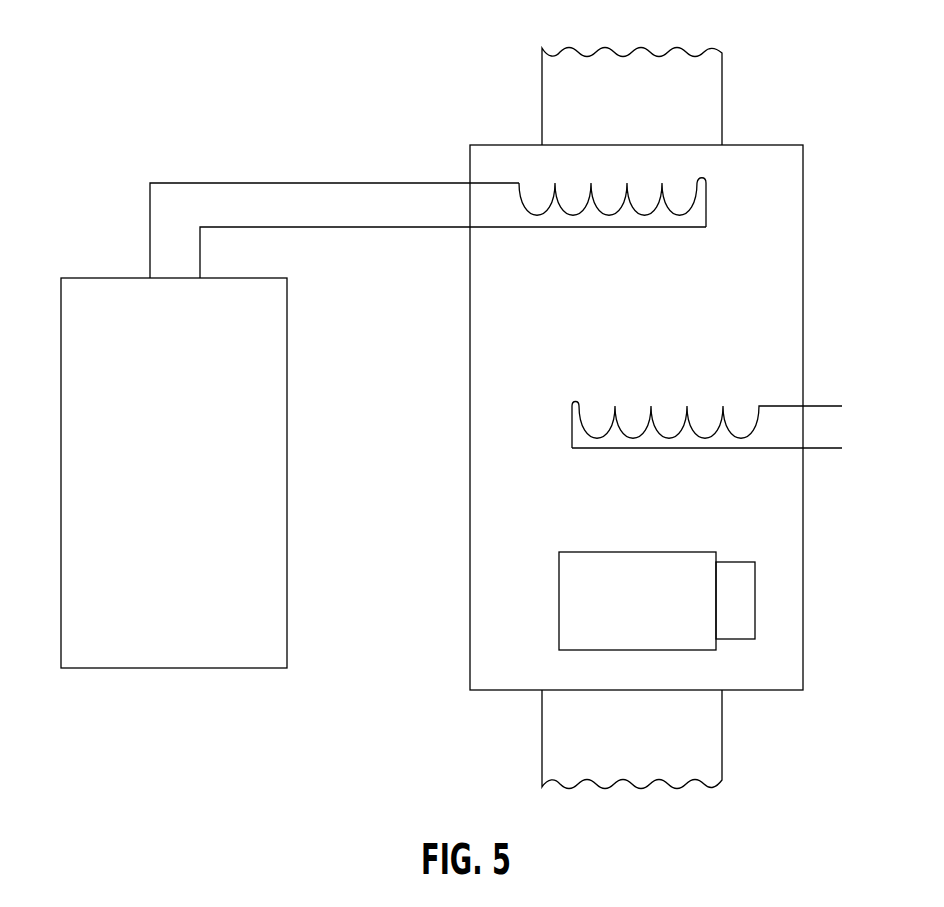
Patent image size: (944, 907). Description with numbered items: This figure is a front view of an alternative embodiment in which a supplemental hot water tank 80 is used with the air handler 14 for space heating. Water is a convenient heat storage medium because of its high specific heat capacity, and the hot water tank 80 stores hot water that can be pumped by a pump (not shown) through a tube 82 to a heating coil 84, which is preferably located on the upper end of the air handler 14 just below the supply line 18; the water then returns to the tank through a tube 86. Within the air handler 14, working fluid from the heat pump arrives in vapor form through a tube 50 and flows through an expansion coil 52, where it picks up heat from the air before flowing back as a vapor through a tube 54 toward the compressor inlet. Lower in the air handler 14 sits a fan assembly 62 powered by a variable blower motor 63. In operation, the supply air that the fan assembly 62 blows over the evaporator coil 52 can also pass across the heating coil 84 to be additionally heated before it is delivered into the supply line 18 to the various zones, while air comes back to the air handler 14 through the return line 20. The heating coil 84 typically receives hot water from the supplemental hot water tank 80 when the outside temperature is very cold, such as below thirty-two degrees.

The air handler 14 is at (787, 650).
The supply line 18 is at (542, 66).
The return line 20 is at (722, 737).
The tube 50 is at (842, 406).
The expansion coil 52 is at (575, 405).
The tube 54 is at (842, 448).
The fan assembly 62 is at (572, 580).
The variable blower motor 63 is at (742, 590).
The hot water tank 80 is at (96, 278).
The tube 82 is at (340, 183).
The heating coil 84 is at (706, 186).
The tube 86 is at (342, 227).